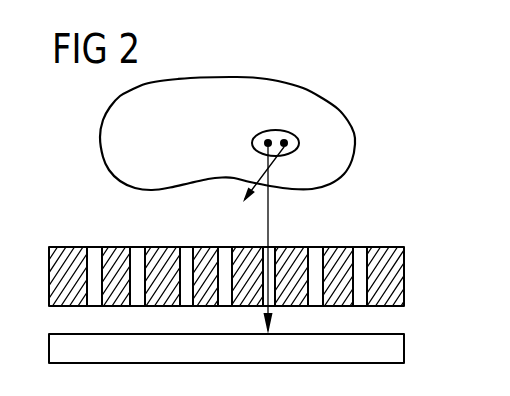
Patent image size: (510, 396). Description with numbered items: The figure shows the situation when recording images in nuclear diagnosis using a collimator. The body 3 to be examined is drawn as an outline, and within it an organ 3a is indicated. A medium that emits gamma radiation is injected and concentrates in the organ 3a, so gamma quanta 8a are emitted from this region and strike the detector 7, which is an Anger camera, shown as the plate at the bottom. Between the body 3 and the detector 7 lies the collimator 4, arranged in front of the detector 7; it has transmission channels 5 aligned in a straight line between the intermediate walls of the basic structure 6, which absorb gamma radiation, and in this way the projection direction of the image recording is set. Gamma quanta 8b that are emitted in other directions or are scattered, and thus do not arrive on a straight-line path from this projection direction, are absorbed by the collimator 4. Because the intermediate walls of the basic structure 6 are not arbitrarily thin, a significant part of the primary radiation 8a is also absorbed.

The body 3 is at (282, 95).
The organ 3a is at (299, 143).
The collimator 4 is at (404, 277).
The transmission channels 5 is at (138, 252).
The basic structure 6 is at (115, 247).
The detector 7 is at (404, 347).
The gamma quanta 8a is at (268, 220).
The gamma quanta 8b is at (260, 178).